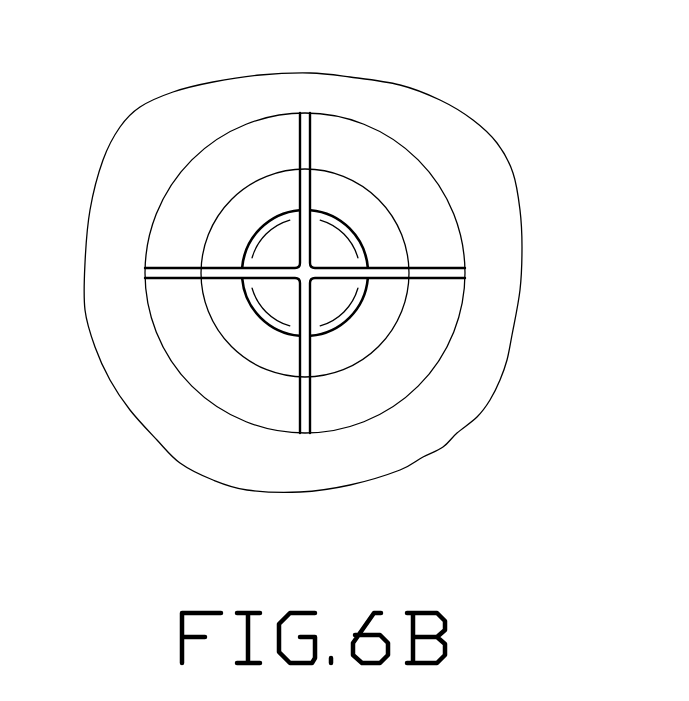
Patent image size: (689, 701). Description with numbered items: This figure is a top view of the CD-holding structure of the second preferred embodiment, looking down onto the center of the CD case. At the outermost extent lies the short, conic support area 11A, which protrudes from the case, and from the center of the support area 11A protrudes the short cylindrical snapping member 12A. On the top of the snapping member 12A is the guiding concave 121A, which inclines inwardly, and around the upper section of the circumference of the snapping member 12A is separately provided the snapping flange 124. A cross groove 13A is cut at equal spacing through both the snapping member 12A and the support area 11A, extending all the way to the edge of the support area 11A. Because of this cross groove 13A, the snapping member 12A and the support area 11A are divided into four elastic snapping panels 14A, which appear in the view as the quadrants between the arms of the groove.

The conic support area 11A is at (232, 217).
The cylindrical snapping member 12A is at (350, 217).
The guiding concave 121A is at (335, 285).
The snapping flange 124 is at (257, 312).
The cross groove 13A is at (300, 353).
The elastic snapping panels 14A is at (392, 367).